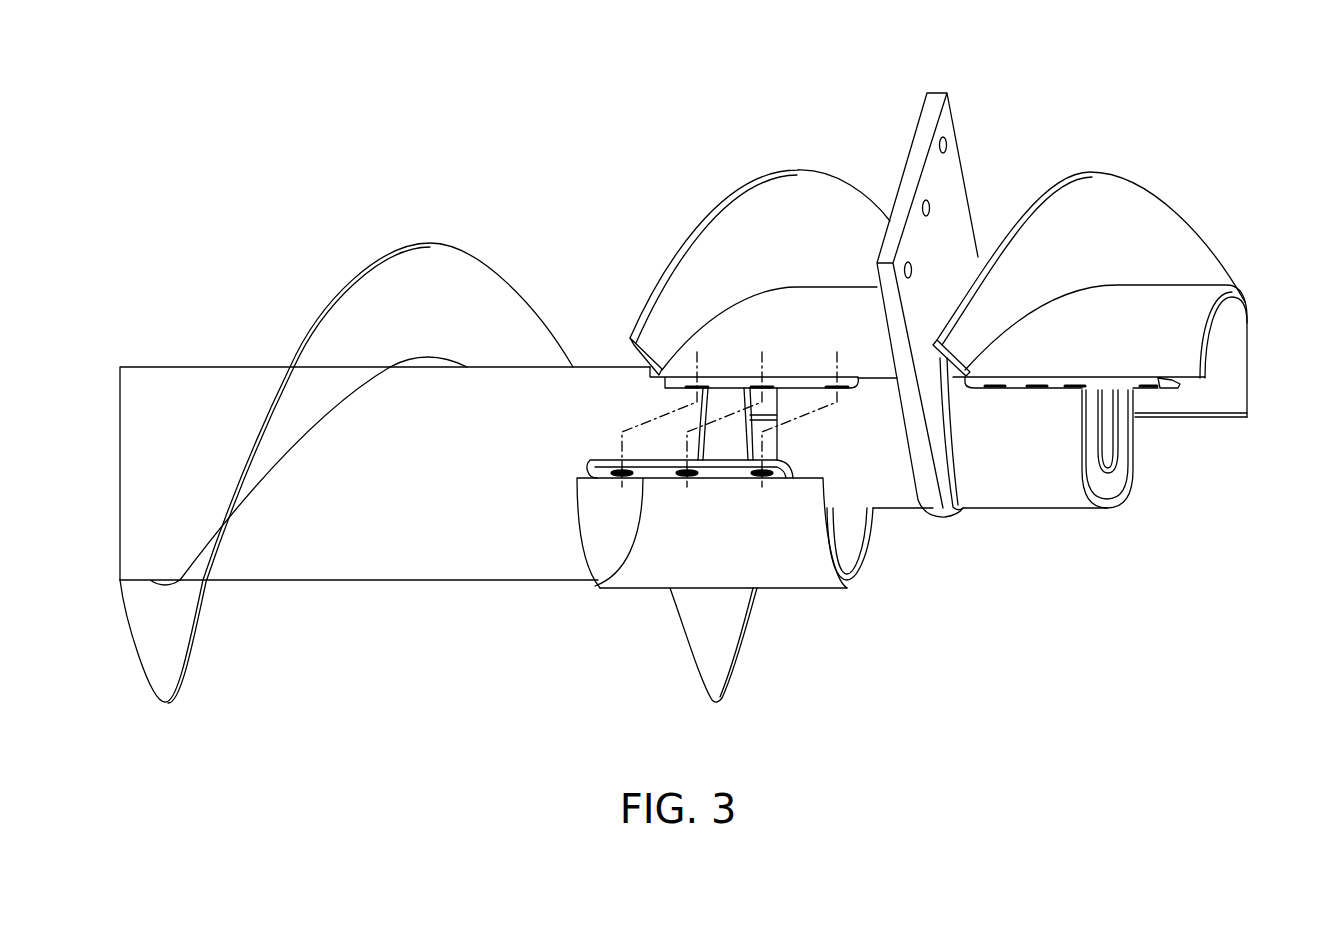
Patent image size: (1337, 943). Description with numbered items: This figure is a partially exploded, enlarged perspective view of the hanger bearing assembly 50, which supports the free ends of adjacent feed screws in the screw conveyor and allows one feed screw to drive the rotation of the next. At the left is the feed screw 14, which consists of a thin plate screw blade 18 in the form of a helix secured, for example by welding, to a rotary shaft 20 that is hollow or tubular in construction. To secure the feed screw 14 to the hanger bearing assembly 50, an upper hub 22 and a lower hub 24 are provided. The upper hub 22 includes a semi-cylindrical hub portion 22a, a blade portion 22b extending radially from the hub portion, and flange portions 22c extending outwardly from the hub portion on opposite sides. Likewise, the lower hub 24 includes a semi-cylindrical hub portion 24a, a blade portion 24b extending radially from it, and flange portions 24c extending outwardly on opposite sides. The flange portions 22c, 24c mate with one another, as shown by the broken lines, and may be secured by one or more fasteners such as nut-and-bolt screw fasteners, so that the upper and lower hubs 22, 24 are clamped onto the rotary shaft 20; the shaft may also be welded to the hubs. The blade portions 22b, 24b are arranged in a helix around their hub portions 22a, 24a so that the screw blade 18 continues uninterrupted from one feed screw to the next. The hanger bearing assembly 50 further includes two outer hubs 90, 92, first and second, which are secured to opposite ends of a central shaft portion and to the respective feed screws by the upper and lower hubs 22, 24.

The feed screw 14 is at (186, 390).
The screw blade 18 is at (410, 242).
The rotary shaft 20 is at (292, 562).
The upper hub 22 is at (633, 348).
The semi-cylindrical hub portion 22a is at (1165, 307).
The blade portion 22b is at (770, 207).
The flange portions 22c is at (690, 377).
The lower hub 24 is at (657, 590).
The semi-cylindrical hub portion 24a is at (793, 577).
The blade portion 24b is at (737, 680).
The flange portions 24c is at (597, 587).
The hanger bearing assembly 50 is at (905, 122).
The outer hub 90 is at (905, 516).
The outer hub 92 is at (1048, 516).